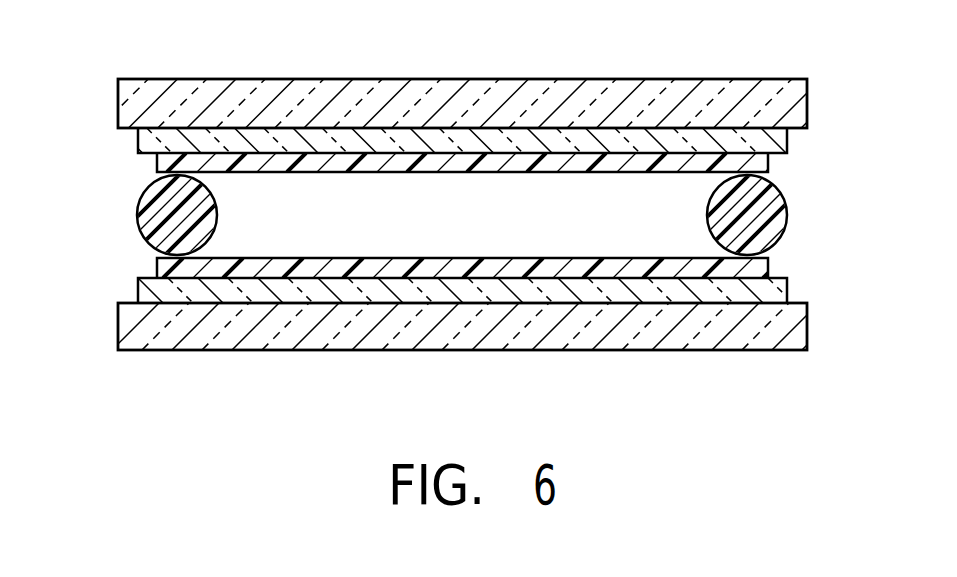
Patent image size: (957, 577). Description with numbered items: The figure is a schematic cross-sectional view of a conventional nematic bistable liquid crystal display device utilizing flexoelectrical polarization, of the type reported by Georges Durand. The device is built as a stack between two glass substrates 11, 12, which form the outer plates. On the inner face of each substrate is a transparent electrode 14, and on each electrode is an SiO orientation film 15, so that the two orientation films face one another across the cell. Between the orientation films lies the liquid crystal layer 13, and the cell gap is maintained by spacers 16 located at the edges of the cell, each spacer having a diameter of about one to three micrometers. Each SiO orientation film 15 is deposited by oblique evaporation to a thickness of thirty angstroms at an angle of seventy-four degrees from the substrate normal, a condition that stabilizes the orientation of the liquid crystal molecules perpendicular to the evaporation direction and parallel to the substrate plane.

The glass substrate 11 is at (770, 84).
The glass substrate 12 is at (797, 337).
The liquid crystal layer 13 is at (278, 248).
The transparent electrode 14 is at (787, 148).
The SiO orientation film 15 is at (760, 270).
The spacer 16 is at (148, 196).